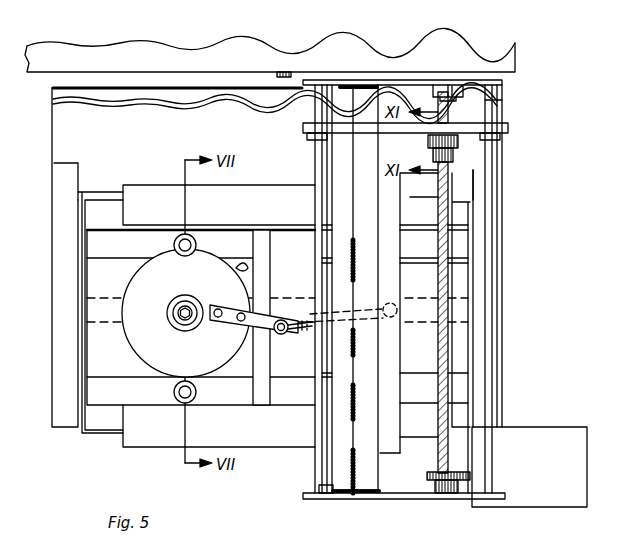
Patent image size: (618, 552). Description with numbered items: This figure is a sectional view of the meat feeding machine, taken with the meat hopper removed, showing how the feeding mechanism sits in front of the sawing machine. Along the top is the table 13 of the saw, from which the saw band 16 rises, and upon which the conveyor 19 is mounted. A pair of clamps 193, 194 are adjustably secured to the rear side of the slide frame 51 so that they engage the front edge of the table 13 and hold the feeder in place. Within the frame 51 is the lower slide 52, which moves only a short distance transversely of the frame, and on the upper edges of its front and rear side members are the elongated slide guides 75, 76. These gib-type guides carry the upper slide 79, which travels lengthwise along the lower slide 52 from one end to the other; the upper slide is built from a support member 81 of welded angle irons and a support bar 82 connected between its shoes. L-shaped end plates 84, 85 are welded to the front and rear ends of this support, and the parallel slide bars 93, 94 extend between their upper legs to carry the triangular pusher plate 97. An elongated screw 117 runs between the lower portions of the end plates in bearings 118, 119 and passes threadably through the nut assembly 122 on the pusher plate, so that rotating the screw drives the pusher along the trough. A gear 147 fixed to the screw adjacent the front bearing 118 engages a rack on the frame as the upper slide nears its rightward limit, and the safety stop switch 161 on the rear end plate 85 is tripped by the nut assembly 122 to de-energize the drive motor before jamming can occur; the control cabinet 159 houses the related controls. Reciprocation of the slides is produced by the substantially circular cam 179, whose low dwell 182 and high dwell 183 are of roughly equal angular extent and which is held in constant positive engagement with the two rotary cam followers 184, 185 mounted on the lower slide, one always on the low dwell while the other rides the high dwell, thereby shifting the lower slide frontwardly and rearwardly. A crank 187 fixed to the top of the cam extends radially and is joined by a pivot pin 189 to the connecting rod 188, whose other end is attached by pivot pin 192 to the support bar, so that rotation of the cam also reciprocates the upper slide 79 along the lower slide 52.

The table 13 is at (67, 125).
The saw blade or band 16 is at (282, 72).
The conveyor 19 is at (510, 60).
The frame 51 is at (68, 430).
The lower slide 52 is at (107, 434).
The slide guide 75 is at (148, 435).
The slide guide 76 is at (145, 190).
The upper slide 79 is at (344, 500).
The support member 81 is at (330, 473).
The support bar 82 is at (385, 404).
The end plate 84 is at (392, 498).
The end plate 85 is at (367, 80).
The slide bar 93 is at (492, 156).
The slide bar 94 is at (318, 163).
The pusher plate 97 is at (510, 128).
The screw 117 is at (446, 282).
The bearing 118 is at (446, 484).
The bearing 119 is at (443, 90).
The nut assembly 122 is at (460, 150).
The gear 147 is at (455, 483).
The control cabinet 159 is at (578, 505).
The safety stop switch 161 is at (454, 92).
The cam 179 is at (190, 344).
The low dwell 182 is at (140, 283).
The high dwell 183 is at (238, 272).
The cam follower 184 is at (174, 392).
The cam follower 185 is at (174, 245).
The crank 187 is at (250, 330).
The connecting rod 188 is at (304, 320).
The pivot pin 189 is at (282, 335).
The pivot pin 192 is at (397, 318).
The clamp 193 is at (62, 180).
The clamp 194 is at (486, 176).